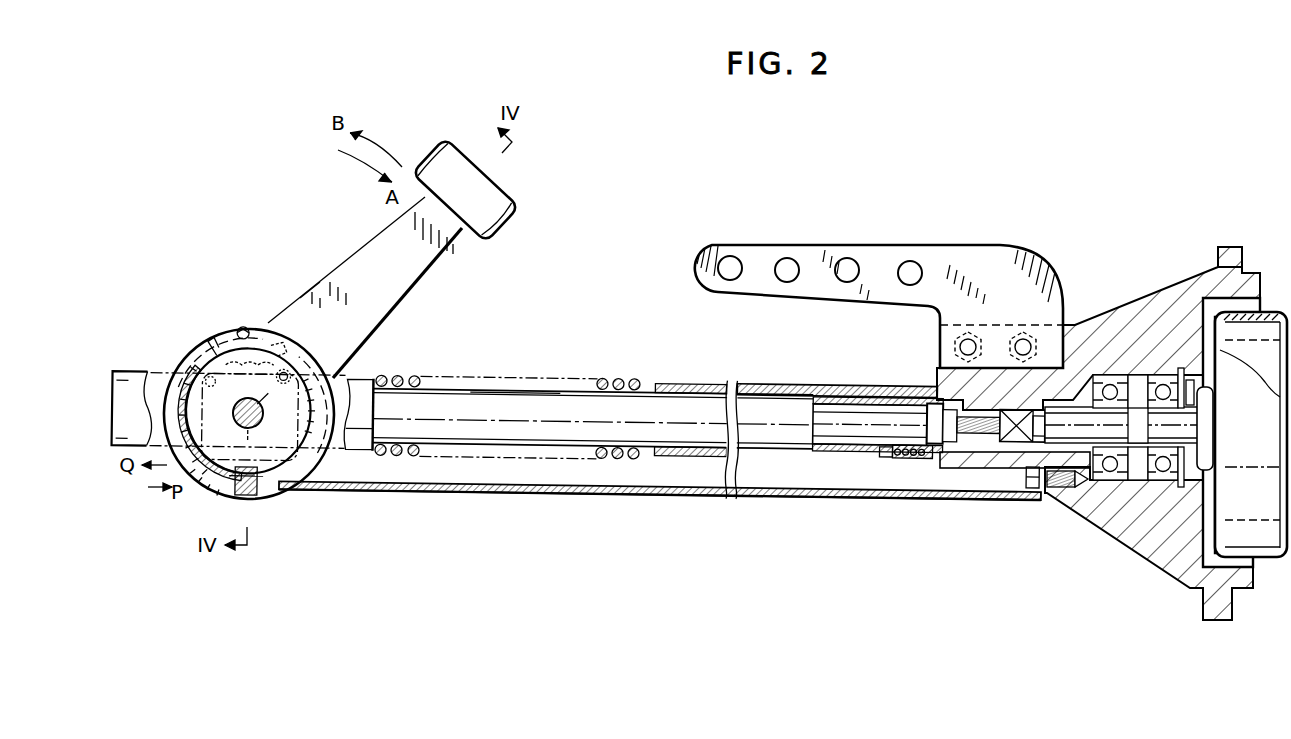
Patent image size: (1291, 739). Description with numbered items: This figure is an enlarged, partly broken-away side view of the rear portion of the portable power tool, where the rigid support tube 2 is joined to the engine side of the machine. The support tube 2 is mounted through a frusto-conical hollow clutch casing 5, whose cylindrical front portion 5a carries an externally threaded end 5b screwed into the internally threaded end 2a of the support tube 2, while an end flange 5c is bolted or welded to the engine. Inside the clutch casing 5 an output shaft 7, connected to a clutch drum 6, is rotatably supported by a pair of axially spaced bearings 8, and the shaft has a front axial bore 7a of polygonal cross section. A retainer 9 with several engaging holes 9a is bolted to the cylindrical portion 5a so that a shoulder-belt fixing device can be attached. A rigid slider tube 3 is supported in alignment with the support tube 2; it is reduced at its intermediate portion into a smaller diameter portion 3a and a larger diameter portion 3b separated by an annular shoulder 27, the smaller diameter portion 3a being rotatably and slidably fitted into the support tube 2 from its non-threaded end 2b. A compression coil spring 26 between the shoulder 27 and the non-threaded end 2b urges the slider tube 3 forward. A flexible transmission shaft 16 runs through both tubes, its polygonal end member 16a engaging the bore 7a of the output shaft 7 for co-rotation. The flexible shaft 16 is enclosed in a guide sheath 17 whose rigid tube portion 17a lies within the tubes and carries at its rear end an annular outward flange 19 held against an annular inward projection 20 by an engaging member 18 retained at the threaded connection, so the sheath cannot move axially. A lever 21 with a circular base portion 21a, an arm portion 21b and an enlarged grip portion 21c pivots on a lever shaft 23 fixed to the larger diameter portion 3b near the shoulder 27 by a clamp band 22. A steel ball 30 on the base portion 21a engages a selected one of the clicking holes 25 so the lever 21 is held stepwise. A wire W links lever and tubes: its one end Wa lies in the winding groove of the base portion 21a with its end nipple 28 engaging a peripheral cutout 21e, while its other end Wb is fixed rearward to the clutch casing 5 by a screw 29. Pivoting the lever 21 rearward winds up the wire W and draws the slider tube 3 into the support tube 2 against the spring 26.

The enlarged grip portion 21c is at (438, 163).
The lever 21 is at (342, 263).
The arm portion 21b is at (306, 293).
The circular base portion 21a is at (200, 333).
The peripheral cutout 21e is at (226, 335).
The end nipple 28 is at (244, 330).
The clicking holes 25 is at (290, 346).
The steel ball 30 is at (318, 367).
The one end of the wire Wa is at (180, 368).
The larger diameter portion 3b is at (134, 373).
The annular shoulder 27 is at (372, 378).
The slider tube 3 is at (468, 388).
The smaller diameter portion 3a is at (518, 390).
The compression coil spring 26 is at (612, 378).
The non-threaded end 2b is at (665, 383).
The support tube 2 is at (770, 386).
The guide sheath 17 is at (837, 396).
The rigid tube portion 17a is at (865, 396).
The externally threaded end 5b is at (925, 392).
The internally threaded end 2a is at (905, 394).
The engaging holes 9a is at (740, 262).
The retainer 9 is at (945, 245).
The front axial bore 7a is at (1062, 313).
The output shaft 7 is at (1106, 385).
The bearings 8 is at (1122, 377).
The clutch casing 5 is at (1172, 287).
The end flange 5c is at (1230, 249).
The clutch drum 6 is at (1270, 315).
The lever shaft 23 is at (240, 418).
The clamp band 22 is at (305, 425).
The wire W is at (490, 492).
The engaging member 18 is at (905, 462).
The annular outward flange 19 is at (925, 470).
The annular inward projection 20 is at (935, 452).
The cylindrical front portion 5a is at (958, 452).
The flexible transmission shaft 16 is at (980, 458).
The end member 16a is at (1030, 445).
The screw 29 is at (1034, 494).
The other end of the wire Wb is at (1050, 490).